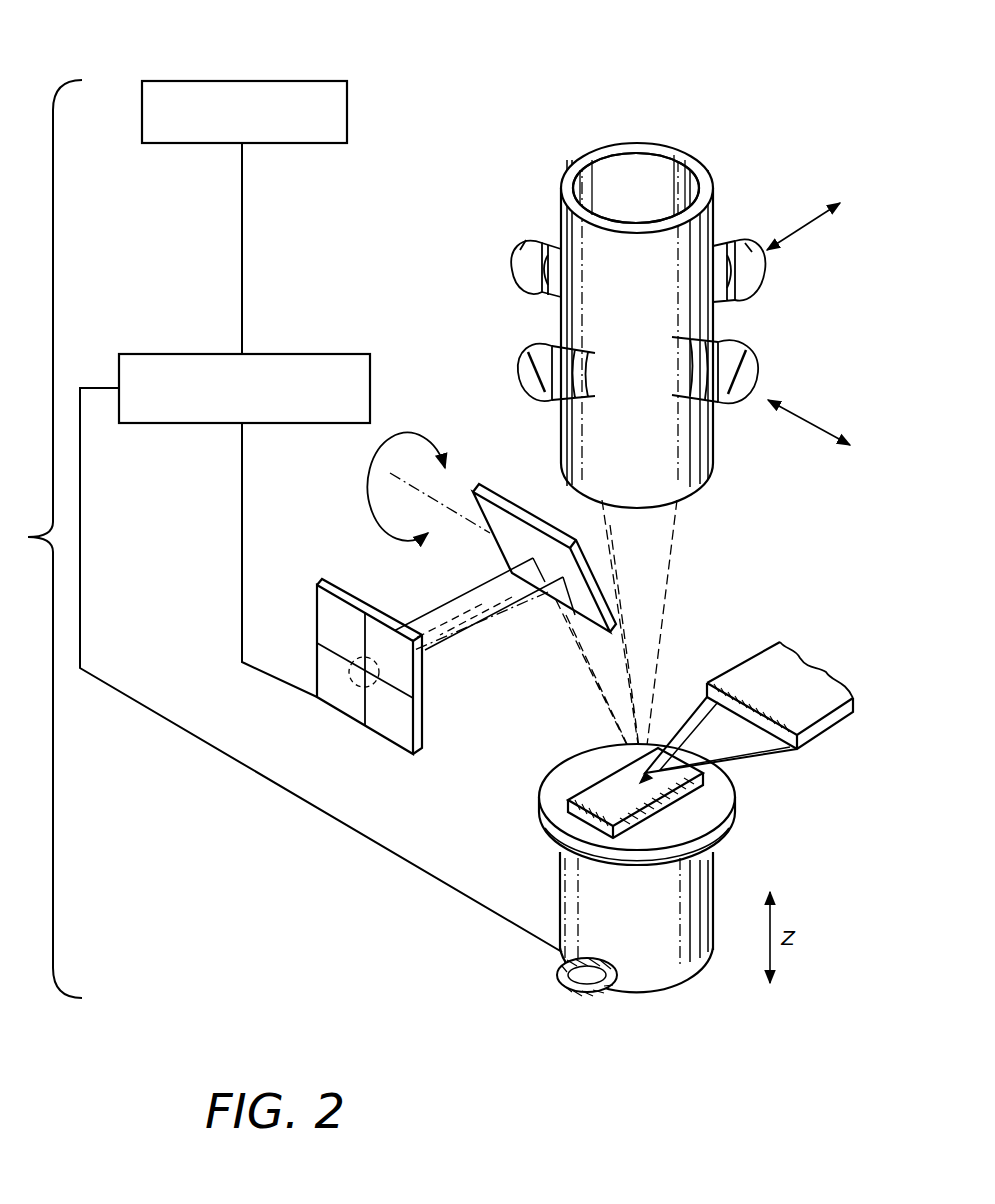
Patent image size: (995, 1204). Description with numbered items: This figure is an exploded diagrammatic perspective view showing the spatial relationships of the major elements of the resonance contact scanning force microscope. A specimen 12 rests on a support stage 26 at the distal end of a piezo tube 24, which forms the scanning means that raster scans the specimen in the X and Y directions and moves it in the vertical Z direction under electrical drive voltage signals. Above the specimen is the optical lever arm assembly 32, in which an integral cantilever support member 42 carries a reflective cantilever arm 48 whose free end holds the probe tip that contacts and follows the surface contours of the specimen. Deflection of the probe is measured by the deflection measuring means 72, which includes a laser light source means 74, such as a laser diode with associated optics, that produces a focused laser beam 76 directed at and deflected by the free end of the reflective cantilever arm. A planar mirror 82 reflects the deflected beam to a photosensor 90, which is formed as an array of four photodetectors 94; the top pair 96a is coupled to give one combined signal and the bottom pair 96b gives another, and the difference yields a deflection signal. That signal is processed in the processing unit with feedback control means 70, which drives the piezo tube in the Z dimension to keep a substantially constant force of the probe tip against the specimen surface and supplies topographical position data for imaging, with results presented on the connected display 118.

The specimen 12 is at (700, 792).
The piezo tube 24 is at (608, 955).
The support stage 26 is at (702, 813).
The optical lever arm assembly 32 is at (747, 702).
The integral cantilever support member 42 is at (768, 665).
The reflective cantilever arm 48 is at (693, 730).
The processing unit with feedback control means 70 is at (342, 354).
The deflection measuring means 72 is at (680, 305).
The laser light source means 74 is at (636, 178).
The focused laser beam 76 is at (682, 520).
The planar mirror 82 is at (493, 492).
The photosensor 90 is at (364, 673).
The photodetectors 94 is at (355, 725).
The top pair 96a is at (330, 612).
The bottom pair 96b is at (332, 693).
The display 118 is at (318, 81).